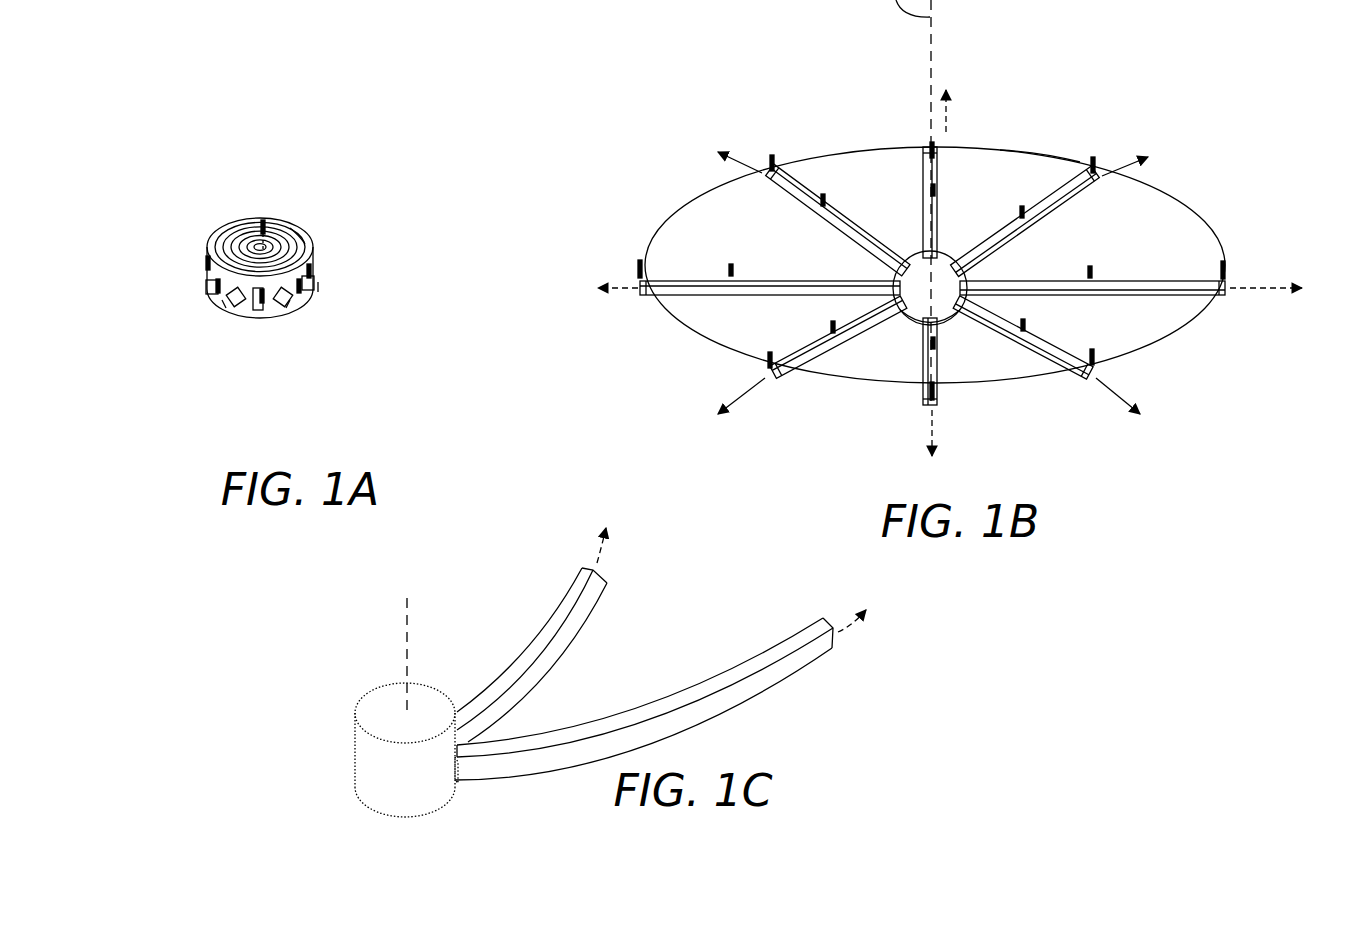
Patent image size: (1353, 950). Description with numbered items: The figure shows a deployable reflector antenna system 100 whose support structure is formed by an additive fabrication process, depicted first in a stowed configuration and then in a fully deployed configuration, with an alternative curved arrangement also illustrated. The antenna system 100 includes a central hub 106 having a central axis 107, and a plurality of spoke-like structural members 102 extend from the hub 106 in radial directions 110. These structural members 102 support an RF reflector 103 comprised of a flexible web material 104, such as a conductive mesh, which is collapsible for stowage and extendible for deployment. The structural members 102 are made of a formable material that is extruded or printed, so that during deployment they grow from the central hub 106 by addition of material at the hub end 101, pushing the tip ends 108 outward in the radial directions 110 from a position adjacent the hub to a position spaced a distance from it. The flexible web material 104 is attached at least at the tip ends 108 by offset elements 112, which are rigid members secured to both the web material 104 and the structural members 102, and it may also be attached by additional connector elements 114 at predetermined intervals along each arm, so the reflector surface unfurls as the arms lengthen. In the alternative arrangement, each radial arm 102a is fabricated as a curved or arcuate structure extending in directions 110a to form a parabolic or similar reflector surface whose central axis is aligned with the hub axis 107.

In FIG. 1A, the deployable reflector antenna system 100 is at (150, 192).
In FIG. 1B, the deployable reflector antenna system 100 is at (614, 199).
In FIG. 1C, the deployable reflector antenna system 100 is at (328, 713).
In FIG. 1B, the hub end 101 is at (956, 305).
In FIG. 1C, the hub end 101 is at (459, 780).
In FIG. 1A, the spoke-like structural members 102 is at (207, 288).
In FIG. 1B, the spoke-like structural members 102 is at (762, 194).
In FIG. 1C, the curved radial arm 102a is at (478, 695).
In FIG. 1A, the RF reflector 103 is at (250, 226).
In FIG. 1B, the RF reflector 103 is at (850, 150).
In FIG. 1A, the flexible web material 104 is at (298, 232).
In FIG. 1B, the flexible web material 104 is at (1012, 170).
In FIG. 1A, the central hub 106 is at (254, 332).
In FIG. 1B, the central hub 106 is at (918, 325).
In FIG. 1C, the central hub 106 is at (403, 834).
In FIG. 1C, the central axis 107 is at (407, 624).
In FIG. 1A, the tip ends 108 is at (320, 288).
In FIG. 1B, the tip ends 108 is at (1228, 285).
In FIG. 1B, the radial directions 110 is at (946, 278).
In FIG. 1C, the directions 110a is at (732, 569).
In FIG. 1A, the offset elements 112 is at (213, 256).
In FIG. 1B, the offset elements 112 is at (775, 163).
In FIG. 1B, the additional connector elements 114 is at (922, 188).